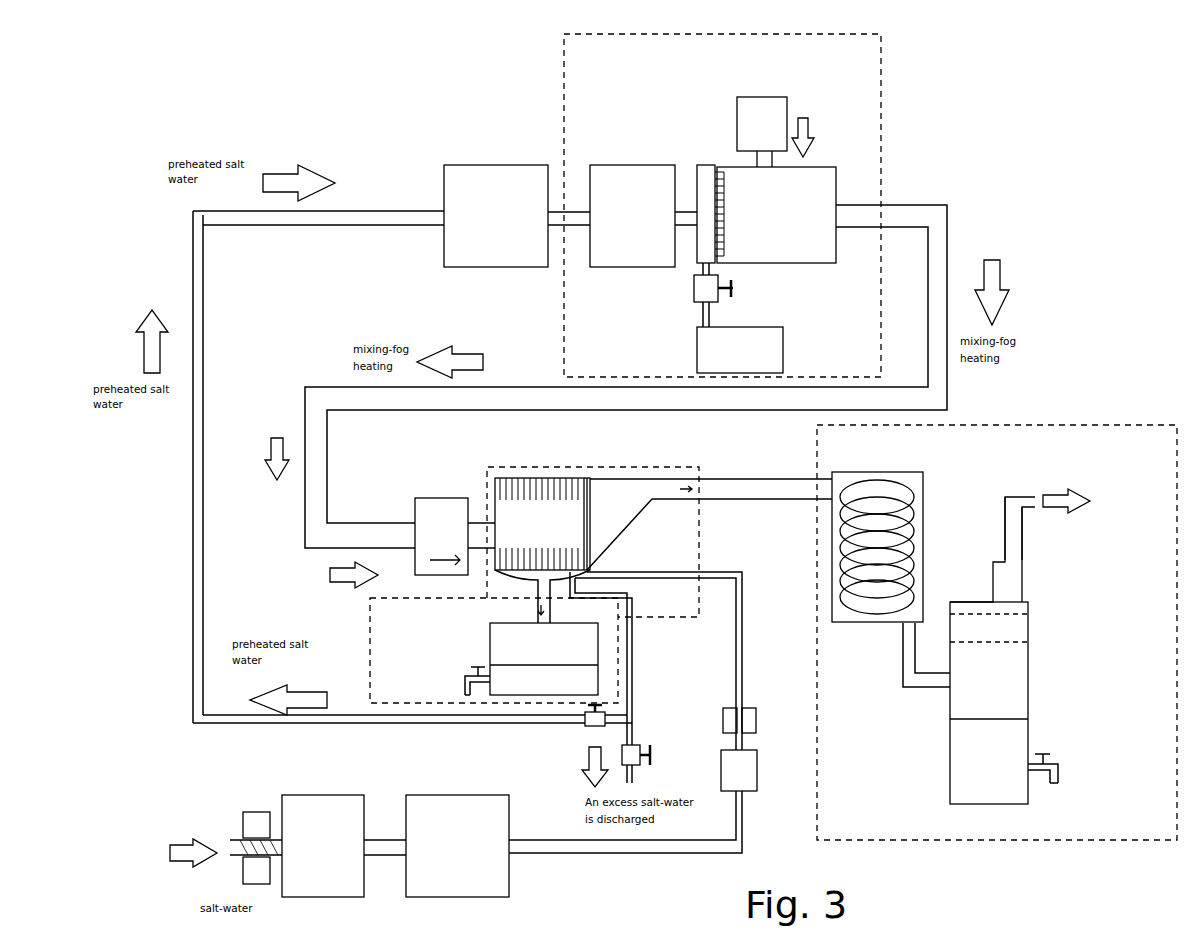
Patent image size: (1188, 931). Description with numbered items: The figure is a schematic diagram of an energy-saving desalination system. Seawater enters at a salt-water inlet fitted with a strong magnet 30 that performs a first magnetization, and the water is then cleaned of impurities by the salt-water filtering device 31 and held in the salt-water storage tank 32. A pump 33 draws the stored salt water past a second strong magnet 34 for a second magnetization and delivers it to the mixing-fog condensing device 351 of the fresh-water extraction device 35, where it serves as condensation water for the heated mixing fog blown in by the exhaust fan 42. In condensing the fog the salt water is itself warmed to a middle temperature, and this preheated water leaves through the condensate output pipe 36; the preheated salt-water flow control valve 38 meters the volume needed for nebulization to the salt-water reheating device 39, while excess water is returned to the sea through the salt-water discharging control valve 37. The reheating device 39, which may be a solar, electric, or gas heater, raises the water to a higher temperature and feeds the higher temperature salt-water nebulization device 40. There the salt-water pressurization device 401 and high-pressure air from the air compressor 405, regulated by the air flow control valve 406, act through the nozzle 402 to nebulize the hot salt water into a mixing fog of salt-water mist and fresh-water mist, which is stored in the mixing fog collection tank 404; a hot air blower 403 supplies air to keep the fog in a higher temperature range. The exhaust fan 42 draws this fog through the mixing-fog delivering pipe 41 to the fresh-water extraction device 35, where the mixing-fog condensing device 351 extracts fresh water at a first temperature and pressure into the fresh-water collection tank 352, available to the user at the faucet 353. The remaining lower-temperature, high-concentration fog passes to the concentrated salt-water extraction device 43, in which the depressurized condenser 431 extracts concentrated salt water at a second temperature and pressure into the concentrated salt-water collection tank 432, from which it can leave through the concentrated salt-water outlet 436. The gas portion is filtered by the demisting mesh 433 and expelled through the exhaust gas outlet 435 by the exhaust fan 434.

The strong magnet 30 is at (252, 812).
The salt-water filtering device 31 is at (333, 795).
The salt-water storage tank 32 is at (470, 795).
The pump 33 is at (757, 773).
The strong magnet 34 is at (752, 708).
The fresh-water extraction device 35 is at (548, 467).
The mixing-fog condensing device 351 is at (587, 538).
The fresh-water collection tank 352 is at (492, 642).
The faucet 353 is at (465, 676).
The condensate output pipe 36 is at (634, 674).
The salt-water discharging control valve 37 is at (640, 745).
The preheated salt-water flow control valve 38 is at (588, 725).
The salt-water reheating device 39 is at (500, 165).
The higher temperature salt-water nebulization device 40 is at (583, 34).
The salt-water pressurization device 401 is at (650, 165).
The nozzle 402 is at (717, 165).
The hot air blower 403 is at (763, 97).
The mixing fog collection tank 404 is at (820, 167).
The air compressor 405 is at (783, 347).
The air flow control valve 406 is at (718, 285).
The mixing-fog delivering pipe 41 is at (947, 247).
The exhaust fan 42 is at (455, 498).
The concentrated salt-water extraction device 43 is at (1095, 425).
The depressurized condenser 431 is at (883, 472).
The concentrated salt-water collection tank 432 is at (1028, 678).
The demisting mesh 433 is at (1028, 630).
The exhaust fan 434 is at (1020, 591).
The exhaust gas outlet 435 is at (1021, 515).
The concentrated salt-water outlet 436 is at (1060, 765).